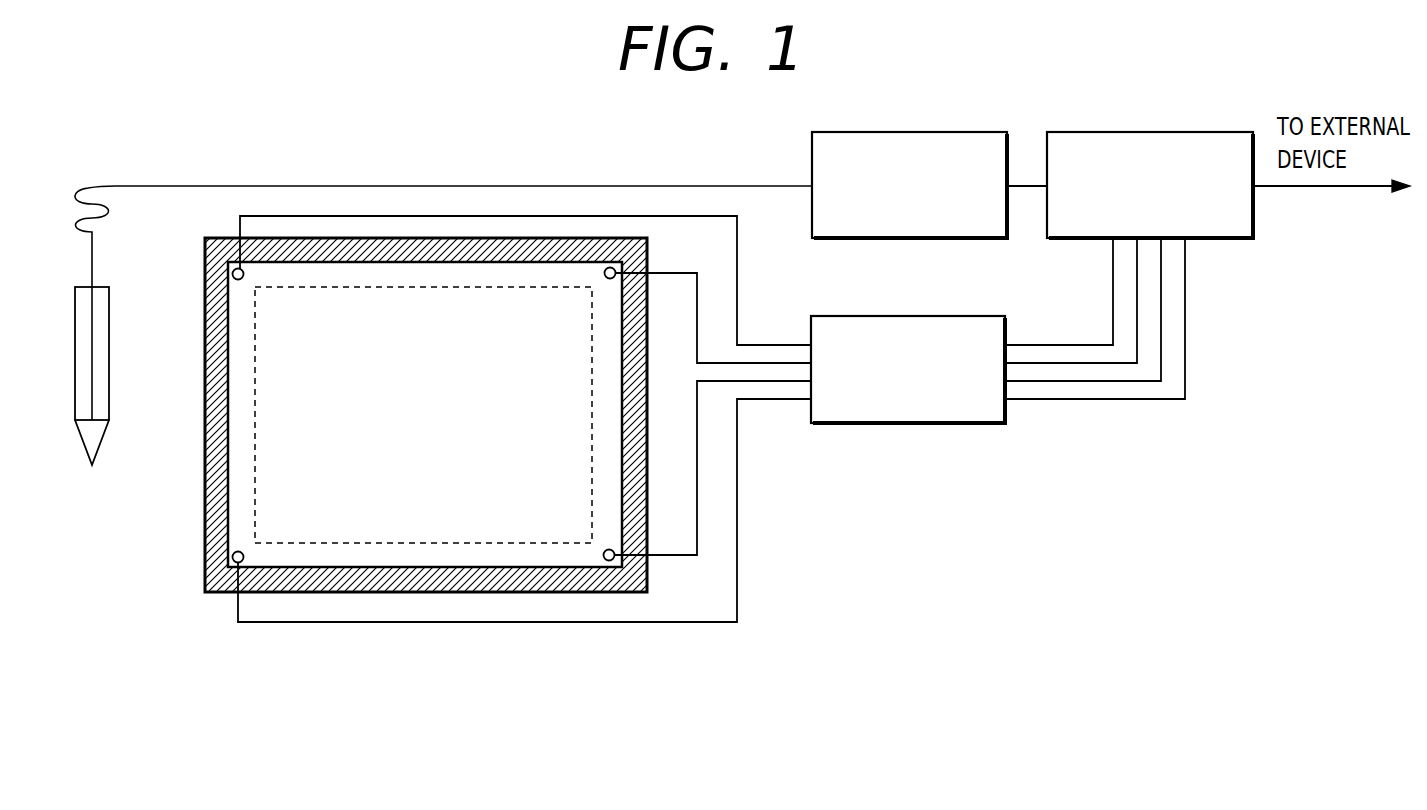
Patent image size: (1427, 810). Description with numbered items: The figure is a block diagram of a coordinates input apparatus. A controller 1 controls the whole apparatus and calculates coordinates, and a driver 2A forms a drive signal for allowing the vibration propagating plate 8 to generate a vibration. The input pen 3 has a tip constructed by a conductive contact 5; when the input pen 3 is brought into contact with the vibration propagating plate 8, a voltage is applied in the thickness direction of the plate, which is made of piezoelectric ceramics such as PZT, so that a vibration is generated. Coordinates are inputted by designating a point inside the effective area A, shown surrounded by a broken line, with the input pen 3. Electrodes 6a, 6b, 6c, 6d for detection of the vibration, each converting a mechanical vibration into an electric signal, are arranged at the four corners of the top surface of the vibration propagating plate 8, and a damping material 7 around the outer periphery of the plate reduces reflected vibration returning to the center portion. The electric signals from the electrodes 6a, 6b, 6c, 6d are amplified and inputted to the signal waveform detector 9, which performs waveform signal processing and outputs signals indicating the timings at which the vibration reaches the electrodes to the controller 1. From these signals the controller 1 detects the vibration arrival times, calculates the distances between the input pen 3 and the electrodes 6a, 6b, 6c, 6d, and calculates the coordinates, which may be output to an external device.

The controller 1 is at (1200, 136).
The driver 2A is at (955, 132).
The input pen 3 is at (113, 302).
The conductive contact 5 is at (100, 445).
The electrode for detection of a vibration 6a is at (243, 280).
The electrode for detection of a vibration 6b is at (605, 280).
The electrode for detection of a vibration 6c is at (242, 551).
The electrode for detection of a vibration 6d is at (604, 549).
The damping material 7 is at (540, 238).
The vibration propagating plate 8 is at (382, 277).
The signal waveform detector 9 is at (955, 318).
The effective area A is at (345, 545).